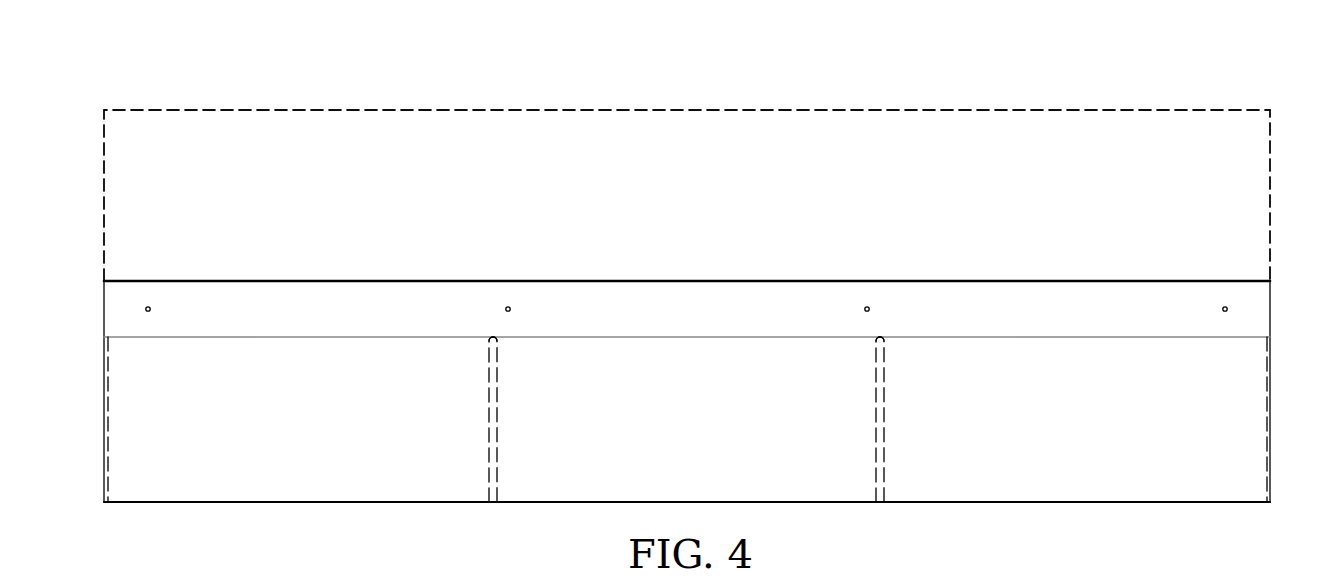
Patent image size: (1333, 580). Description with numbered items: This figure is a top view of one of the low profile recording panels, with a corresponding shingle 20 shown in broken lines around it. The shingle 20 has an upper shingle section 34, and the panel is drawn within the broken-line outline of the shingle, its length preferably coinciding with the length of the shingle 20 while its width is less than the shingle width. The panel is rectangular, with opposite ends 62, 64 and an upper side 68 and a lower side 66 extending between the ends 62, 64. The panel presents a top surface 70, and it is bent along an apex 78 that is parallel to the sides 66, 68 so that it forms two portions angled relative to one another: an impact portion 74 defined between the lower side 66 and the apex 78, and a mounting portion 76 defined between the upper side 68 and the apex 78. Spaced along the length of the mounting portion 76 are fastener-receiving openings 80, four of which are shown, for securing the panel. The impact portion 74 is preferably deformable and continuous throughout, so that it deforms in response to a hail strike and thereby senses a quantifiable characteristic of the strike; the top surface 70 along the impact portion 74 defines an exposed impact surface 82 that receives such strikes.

The shingle 20 is at (873, 142).
The upper shingle section 34 is at (687, 195).
The lower side 66 is at (802, 281).
The mounting portion 76 is at (390, 308).
The apex 78 is at (127, 335).
The fastener-receiving openings 80 is at (1225, 309).
The end 62 is at (104, 412).
The end 64 is at (1270, 382).
The top surface 70 is at (224, 475).
The impact portion 74 is at (389, 475).
The upper side 68 is at (573, 503).
The exposed impact surface 82 is at (815, 475).